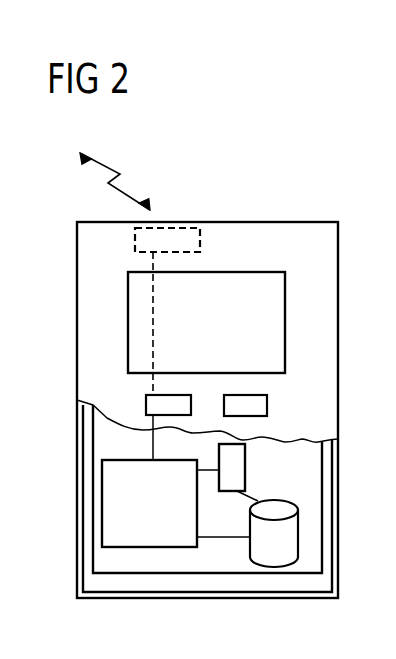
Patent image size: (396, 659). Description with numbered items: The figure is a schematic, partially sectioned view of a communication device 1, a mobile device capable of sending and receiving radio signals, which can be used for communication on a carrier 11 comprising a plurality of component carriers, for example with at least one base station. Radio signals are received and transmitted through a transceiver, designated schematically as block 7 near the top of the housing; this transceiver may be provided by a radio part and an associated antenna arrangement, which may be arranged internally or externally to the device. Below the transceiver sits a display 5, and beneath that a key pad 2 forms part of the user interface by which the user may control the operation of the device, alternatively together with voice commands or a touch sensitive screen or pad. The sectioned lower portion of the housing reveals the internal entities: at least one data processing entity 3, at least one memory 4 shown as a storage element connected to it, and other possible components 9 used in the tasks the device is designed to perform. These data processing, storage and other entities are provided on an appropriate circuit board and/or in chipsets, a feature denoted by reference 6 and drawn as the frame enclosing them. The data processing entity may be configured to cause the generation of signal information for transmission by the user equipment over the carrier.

The communication device 1 is at (205, 222).
The key pad 2 is at (146, 405).
The data processing entity 3 is at (102, 500).
The memory 4 is at (262, 567).
The display 5 is at (285, 322).
The circuit board 6 is at (103, 562).
The transceiver 7 is at (200, 243).
The other components 9 is at (245, 455).
The carrier 11 is at (112, 173).